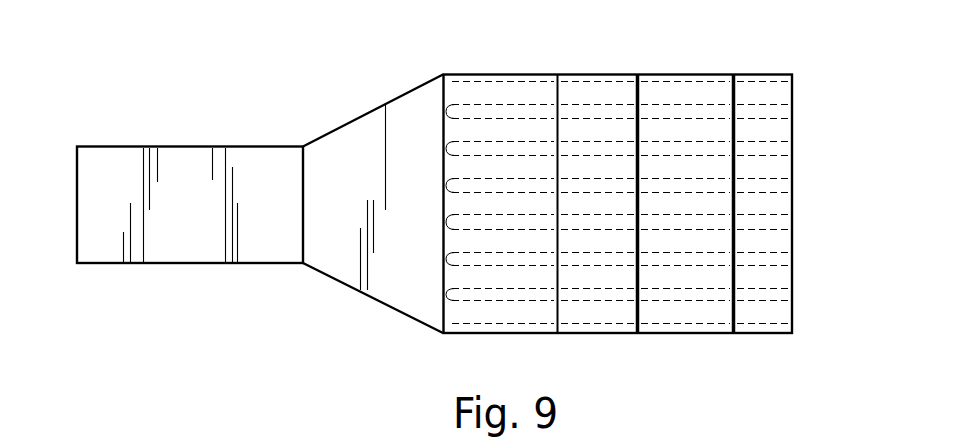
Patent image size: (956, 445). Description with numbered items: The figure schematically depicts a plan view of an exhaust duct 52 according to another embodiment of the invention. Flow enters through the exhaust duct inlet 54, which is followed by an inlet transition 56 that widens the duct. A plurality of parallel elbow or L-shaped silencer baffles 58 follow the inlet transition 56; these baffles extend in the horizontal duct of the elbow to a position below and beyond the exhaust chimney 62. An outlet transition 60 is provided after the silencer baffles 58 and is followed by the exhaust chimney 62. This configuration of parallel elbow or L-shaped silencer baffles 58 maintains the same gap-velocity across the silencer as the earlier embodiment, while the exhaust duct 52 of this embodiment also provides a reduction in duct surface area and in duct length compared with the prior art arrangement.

The exhaust duct 52 is at (195, 74).
The exhaust duct inlet 54 is at (107, 158).
The inlet transition 56 is at (350, 138).
The parallel elbow or L-shaped silencer baffles 58 is at (520, 172).
The outlet transition 60 is at (782, 205).
The exhaust chimney 62 is at (672, 93).